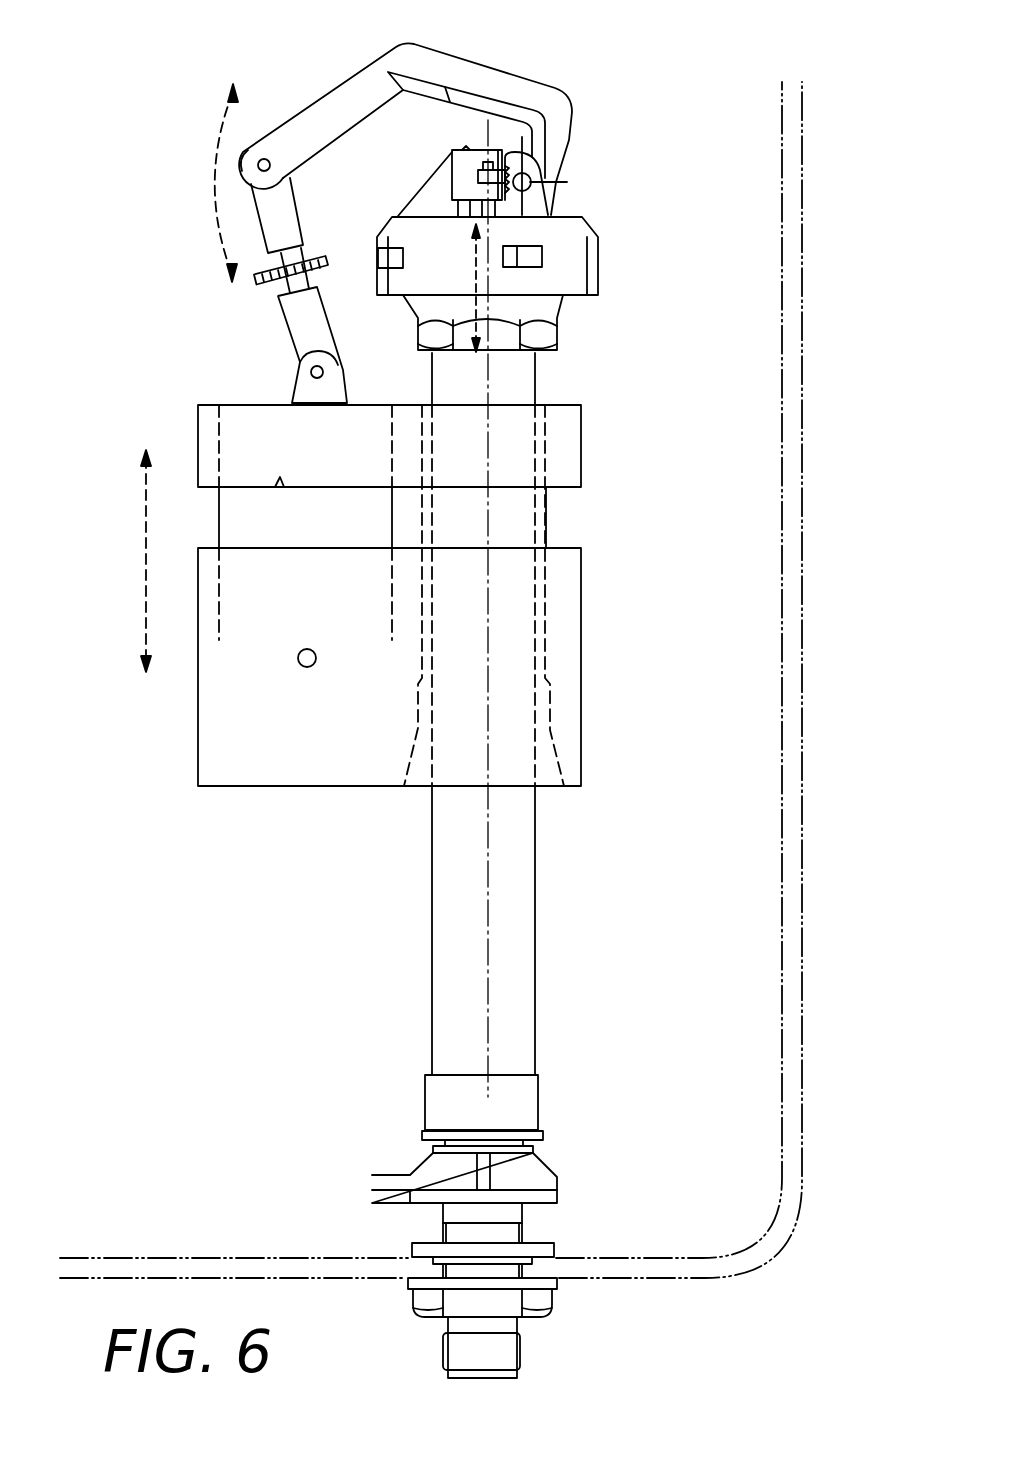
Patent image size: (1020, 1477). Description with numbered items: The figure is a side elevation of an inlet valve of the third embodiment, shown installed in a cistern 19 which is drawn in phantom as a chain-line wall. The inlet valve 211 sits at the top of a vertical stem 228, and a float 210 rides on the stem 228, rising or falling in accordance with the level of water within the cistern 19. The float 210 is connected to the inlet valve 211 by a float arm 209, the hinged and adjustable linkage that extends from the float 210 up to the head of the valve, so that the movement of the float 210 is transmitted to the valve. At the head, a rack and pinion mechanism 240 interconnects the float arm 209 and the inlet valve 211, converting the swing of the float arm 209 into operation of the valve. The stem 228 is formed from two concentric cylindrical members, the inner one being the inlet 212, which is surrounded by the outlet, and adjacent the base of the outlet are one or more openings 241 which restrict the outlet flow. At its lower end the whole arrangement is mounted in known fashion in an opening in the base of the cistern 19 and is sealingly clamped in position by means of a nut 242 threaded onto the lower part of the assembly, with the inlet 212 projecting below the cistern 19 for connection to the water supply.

The float arm 209 is at (318, 125).
The inlet valve 211 is at (548, 58).
The rack and pinion mechanism 240 is at (508, 143).
The float 210 is at (570, 603).
The stem 228 is at (520, 882).
The openings 241 is at (428, 1140).
The nut 242 is at (545, 1303).
The inlet 212 is at (500, 1353).
The cistern 19 is at (791, 957).